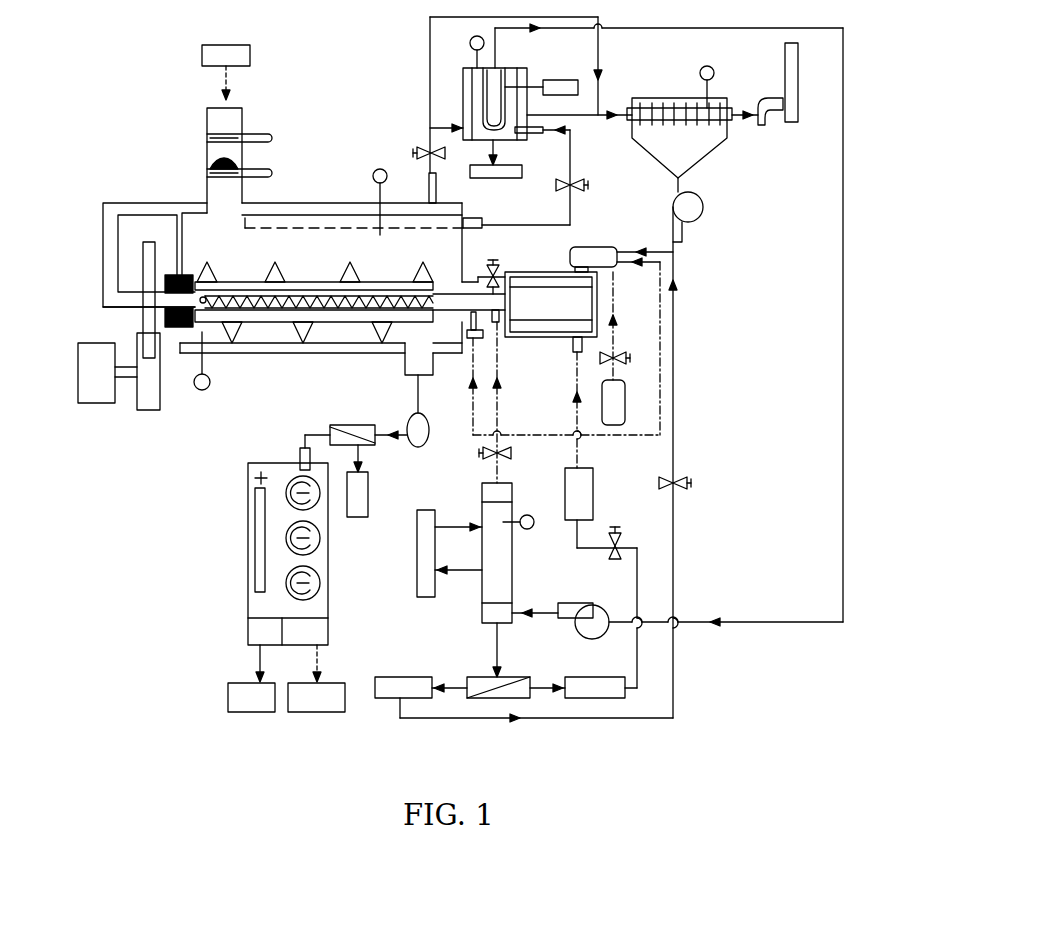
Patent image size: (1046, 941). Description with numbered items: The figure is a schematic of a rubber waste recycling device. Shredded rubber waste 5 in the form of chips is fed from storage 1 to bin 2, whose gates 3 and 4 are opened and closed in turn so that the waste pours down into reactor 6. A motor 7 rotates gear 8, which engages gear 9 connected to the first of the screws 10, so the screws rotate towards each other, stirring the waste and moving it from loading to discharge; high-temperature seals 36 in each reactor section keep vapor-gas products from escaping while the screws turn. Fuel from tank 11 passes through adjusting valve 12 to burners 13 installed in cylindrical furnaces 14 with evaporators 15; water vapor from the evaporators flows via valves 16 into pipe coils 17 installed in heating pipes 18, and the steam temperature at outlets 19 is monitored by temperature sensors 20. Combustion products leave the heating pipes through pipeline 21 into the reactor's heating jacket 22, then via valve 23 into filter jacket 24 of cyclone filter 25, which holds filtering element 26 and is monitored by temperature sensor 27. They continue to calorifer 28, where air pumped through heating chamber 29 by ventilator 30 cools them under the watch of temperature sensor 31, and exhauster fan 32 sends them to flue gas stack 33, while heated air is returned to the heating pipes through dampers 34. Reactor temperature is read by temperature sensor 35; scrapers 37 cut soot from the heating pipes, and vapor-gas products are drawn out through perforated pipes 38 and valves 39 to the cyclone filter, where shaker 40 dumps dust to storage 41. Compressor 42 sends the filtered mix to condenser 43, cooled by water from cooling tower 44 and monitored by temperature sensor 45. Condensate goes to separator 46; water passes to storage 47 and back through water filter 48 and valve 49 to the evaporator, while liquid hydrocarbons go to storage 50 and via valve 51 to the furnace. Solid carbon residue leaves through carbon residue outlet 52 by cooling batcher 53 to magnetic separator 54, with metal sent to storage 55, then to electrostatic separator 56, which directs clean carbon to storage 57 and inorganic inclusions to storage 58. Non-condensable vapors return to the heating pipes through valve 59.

The storage 1 is at (238, 58).
The bin 2 is at (207, 122).
The gate 3 is at (266, 136).
The gate 4 is at (268, 172).
The waste 5 is at (218, 161).
The reactor 6 is at (318, 250).
The motor 7 is at (100, 385).
The gear 8 is at (150, 395).
The gear 9 is at (148, 330).
The screws 10 is at (372, 296).
The tank 11 is at (612, 408).
The adjusting valve 12 is at (618, 354).
The burners 13 is at (600, 250).
The cylindrical furnaces 14 is at (535, 310).
The evaporators 15 is at (545, 322).
The valves 16 is at (498, 268).
The pipe coils 17 is at (352, 312).
The heating pipes 18 is at (122, 300).
The steam outlets 19 is at (207, 304).
The temperature sensors 20 is at (200, 392).
The pipeline 21 is at (112, 232).
The reactor's heating jacket 22 is at (196, 210).
The valve 23 is at (428, 148).
The filter jacket 24 is at (470, 98).
The cyclone filter 25 is at (510, 74).
The filtering element 26 is at (486, 108).
The temperature sensor 27 is at (470, 40).
The calorifer 28 is at (668, 104).
The heating chamber 29 is at (690, 140).
The ventilator 30 is at (694, 212).
The temperature sensor 31 is at (702, 68).
The exhauster fan 32 is at (760, 108).
The flue gas stack 33 is at (798, 100).
The damper 34 is at (470, 340).
The temperature sensor 35 is at (378, 168).
The high-temperature seal 36 is at (178, 330).
The scrapers 37 is at (312, 312).
The perforated pipes 38 is at (472, 220).
The valve 39 is at (574, 180).
The shaker 40 is at (555, 85).
The storage 41 is at (512, 172).
The compressor 42 is at (590, 612).
The condenser 43 is at (500, 560).
The cooling tower 44 is at (425, 550).
The temperature sensor 45 is at (528, 514).
The separator 46 is at (485, 685).
The storage 47 is at (592, 685).
The water filter 48 is at (582, 490).
The valve 49 is at (616, 526).
The storage 50 is at (400, 688).
The valve 51 is at (674, 490).
The carbon residue outlet 52 is at (412, 362).
The cooling batcher 53 is at (424, 444).
The magnetic separator 54 is at (368, 445).
The storage 55 is at (358, 496).
The electrostatic separator 56 is at (255, 553).
The storage 57 is at (325, 692).
The storage 58 is at (245, 692).
The valve 59 is at (490, 458).